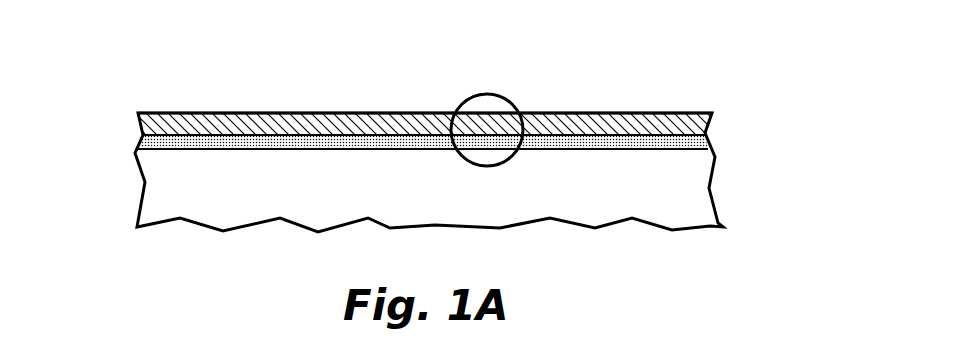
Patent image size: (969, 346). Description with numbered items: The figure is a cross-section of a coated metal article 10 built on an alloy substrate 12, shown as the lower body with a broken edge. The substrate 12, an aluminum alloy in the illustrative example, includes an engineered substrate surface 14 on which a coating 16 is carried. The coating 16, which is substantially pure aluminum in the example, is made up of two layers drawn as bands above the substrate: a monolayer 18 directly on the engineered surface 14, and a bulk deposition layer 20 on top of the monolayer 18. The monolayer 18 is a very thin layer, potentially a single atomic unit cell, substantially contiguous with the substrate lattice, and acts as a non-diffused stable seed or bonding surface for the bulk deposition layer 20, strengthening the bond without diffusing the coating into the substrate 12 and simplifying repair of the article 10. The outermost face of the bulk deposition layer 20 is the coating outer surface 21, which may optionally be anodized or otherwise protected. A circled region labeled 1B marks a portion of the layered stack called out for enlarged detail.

The article 10 is at (440, 134).
The alloy substrate 12 is at (548, 207).
The engineered substrate surface 14 is at (315, 150).
The coating 16 is at (378, 124).
The monolayer 18 is at (683, 140).
The bulk deposition layer 20 is at (425, 86).
The coating outer surface 21 is at (408, 113).
The detail region 1B is at (494, 93).